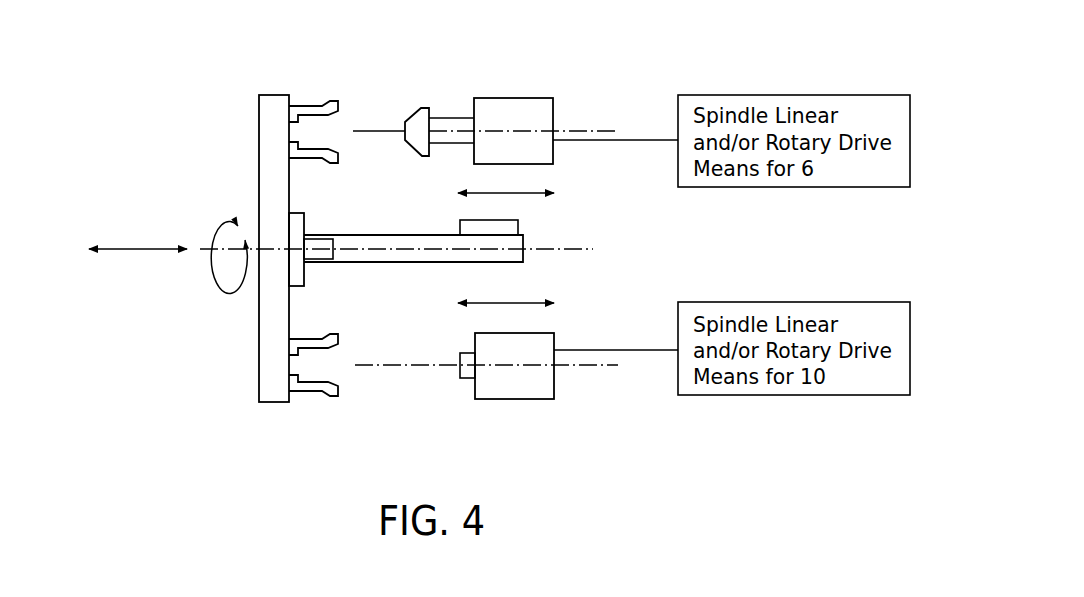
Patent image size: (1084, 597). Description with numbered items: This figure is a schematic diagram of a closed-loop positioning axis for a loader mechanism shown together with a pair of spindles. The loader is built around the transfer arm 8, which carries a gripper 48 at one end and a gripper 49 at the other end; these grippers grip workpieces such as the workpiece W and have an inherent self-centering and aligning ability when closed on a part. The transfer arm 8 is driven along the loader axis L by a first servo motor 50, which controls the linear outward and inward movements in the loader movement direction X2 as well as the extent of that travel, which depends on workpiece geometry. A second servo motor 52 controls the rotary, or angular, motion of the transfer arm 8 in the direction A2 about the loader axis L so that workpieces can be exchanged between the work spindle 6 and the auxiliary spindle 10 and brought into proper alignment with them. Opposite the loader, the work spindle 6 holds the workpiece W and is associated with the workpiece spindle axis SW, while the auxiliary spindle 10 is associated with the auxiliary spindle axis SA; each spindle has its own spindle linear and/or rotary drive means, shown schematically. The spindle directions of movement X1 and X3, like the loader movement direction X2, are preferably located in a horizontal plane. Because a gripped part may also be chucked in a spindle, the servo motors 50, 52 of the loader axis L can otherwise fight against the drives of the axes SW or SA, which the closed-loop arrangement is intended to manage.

The work spindle 6 is at (511, 108).
The transfer arm 8 is at (272, 328).
The auxiliary spindle 10 is at (543, 347).
The gripper 48 is at (333, 104).
The gripper 49 is at (320, 396).
The first servo motor 50 is at (468, 230).
The servo motor 52 is at (323, 240).
The workpiece W is at (421, 120).
The loader axis L is at (593, 248).
The workpiece spindle axis SW is at (604, 130).
The auxiliary spindle axis SA is at (600, 367).
The spindle direction of movement X1 is at (524, 193).
The loader movement direction X2 is at (138, 268).
The spindle direction of movement X3 is at (524, 303).
The rotary motion direction A2 is at (230, 232).